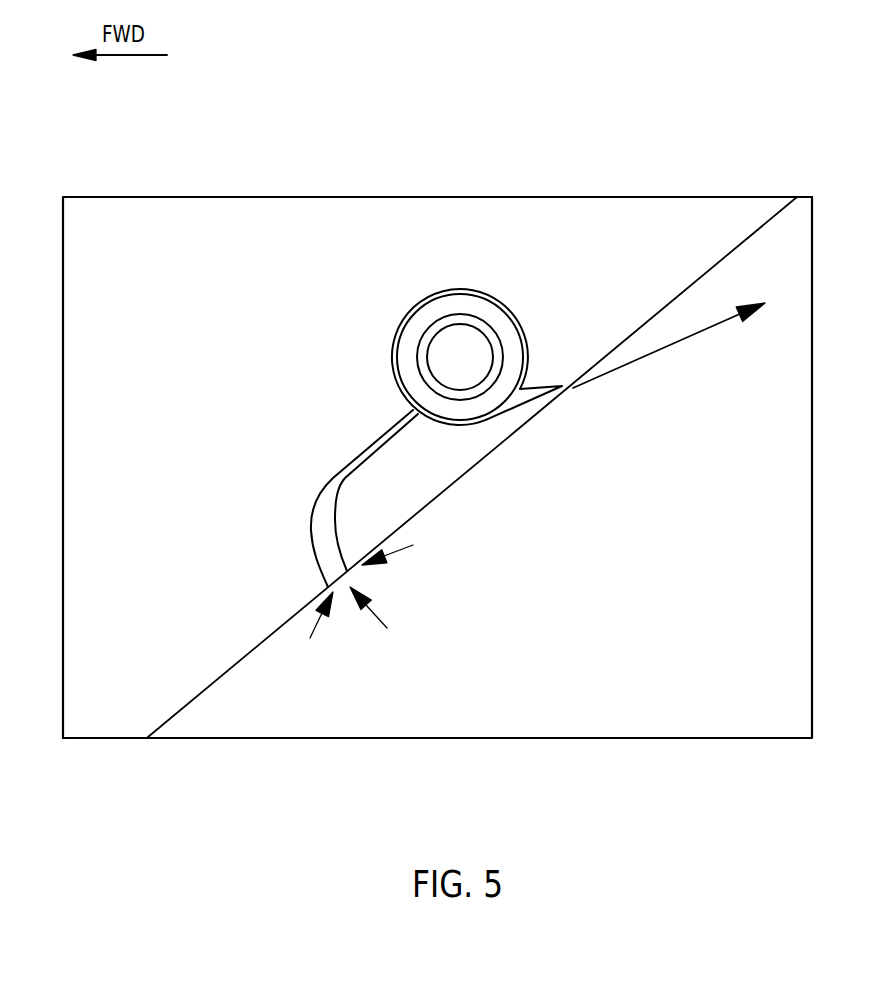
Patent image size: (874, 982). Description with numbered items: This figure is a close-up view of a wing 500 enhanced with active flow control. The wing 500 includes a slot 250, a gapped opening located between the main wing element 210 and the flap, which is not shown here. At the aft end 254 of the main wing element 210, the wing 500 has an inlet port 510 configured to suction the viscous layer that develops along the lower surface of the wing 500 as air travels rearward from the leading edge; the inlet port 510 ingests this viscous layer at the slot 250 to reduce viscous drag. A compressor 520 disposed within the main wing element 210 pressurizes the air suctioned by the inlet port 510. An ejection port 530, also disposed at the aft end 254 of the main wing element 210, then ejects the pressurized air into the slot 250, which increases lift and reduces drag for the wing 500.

The wing 500 is at (437, 466).
The main wing element 210 is at (484, 216).
The slot 250 is at (583, 698).
The aft end 254 is at (714, 257).
The compressor 520 is at (470, 355).
The ejection port 530 is at (570, 368).
The inlet port 510 is at (290, 576).